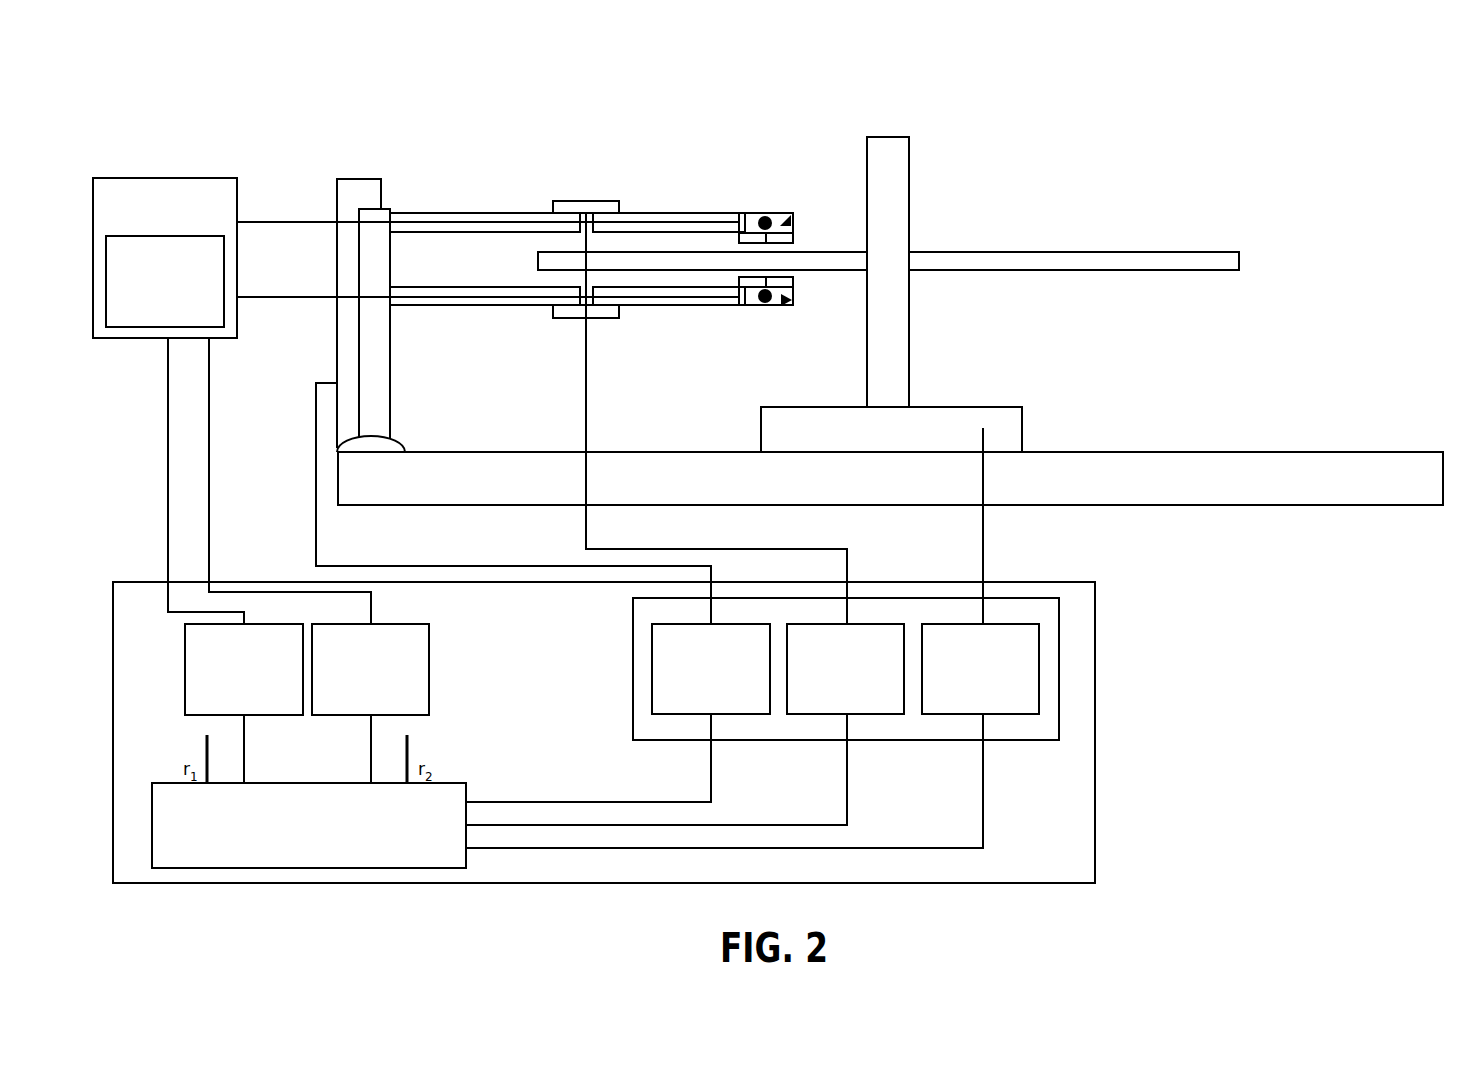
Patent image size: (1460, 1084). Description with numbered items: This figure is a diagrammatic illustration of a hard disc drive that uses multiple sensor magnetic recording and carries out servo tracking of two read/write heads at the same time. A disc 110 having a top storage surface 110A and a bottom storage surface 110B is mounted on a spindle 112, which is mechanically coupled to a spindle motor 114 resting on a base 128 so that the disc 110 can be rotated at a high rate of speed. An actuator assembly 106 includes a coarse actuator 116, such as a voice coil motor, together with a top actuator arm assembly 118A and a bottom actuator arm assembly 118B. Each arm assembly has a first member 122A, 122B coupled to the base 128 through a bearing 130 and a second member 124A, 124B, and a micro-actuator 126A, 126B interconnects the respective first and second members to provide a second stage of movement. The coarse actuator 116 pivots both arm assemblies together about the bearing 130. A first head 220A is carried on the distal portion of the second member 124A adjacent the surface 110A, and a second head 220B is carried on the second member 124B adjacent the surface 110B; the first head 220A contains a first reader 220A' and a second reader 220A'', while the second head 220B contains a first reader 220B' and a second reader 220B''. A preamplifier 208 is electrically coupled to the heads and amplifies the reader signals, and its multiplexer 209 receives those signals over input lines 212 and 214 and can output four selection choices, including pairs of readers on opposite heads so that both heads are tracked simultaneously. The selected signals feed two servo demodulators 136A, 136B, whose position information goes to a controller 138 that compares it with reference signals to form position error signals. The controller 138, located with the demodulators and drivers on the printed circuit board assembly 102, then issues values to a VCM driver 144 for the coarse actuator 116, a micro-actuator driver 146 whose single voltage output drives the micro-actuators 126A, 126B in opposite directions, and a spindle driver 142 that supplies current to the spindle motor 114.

The printed circuit board assembly 102 is at (1095, 628).
The actuator assembly 106 is at (326, 91).
The disc 110 is at (923, 268).
The storage surface 110A is at (1155, 251).
The storage surface 110B is at (1160, 271).
The spindle 112 is at (910, 148).
The spindle motor 114 is at (977, 417).
The coarse actuator 116 is at (361, 186).
The top actuator arm assembly 118A is at (563, 172).
The bottom actuator arm assembly 118B is at (610, 352).
The first member 122A is at (460, 214).
The first member 122B is at (458, 306).
The second member 124A is at (684, 213).
The second member 124B is at (692, 306).
The micro-actuator 126A is at (603, 200).
The micro-actuator 126B is at (560, 320).
The base 128 is at (1142, 505).
The bearing 130 is at (348, 447).
The servo demodulator 136A is at (193, 696).
The servo demodulator 136B is at (420, 702).
The controller 138 is at (452, 793).
The spindle driver 142 is at (748, 703).
The VCM driver 144 is at (883, 703).
The micro-actuator driver 146 is at (1018, 703).
The preamplifier 208 is at (120, 177).
The multiplexer 209 is at (120, 339).
The input line 212 is at (262, 221).
The input line 214 is at (298, 299).
The first head 220A is at (786, 172).
The first reader 220A' is at (815, 195).
The second reader 220A'' is at (749, 205).
The second head 220B is at (785, 337).
The first reader 220B' is at (816, 318).
The second reader 220B'' is at (747, 316).